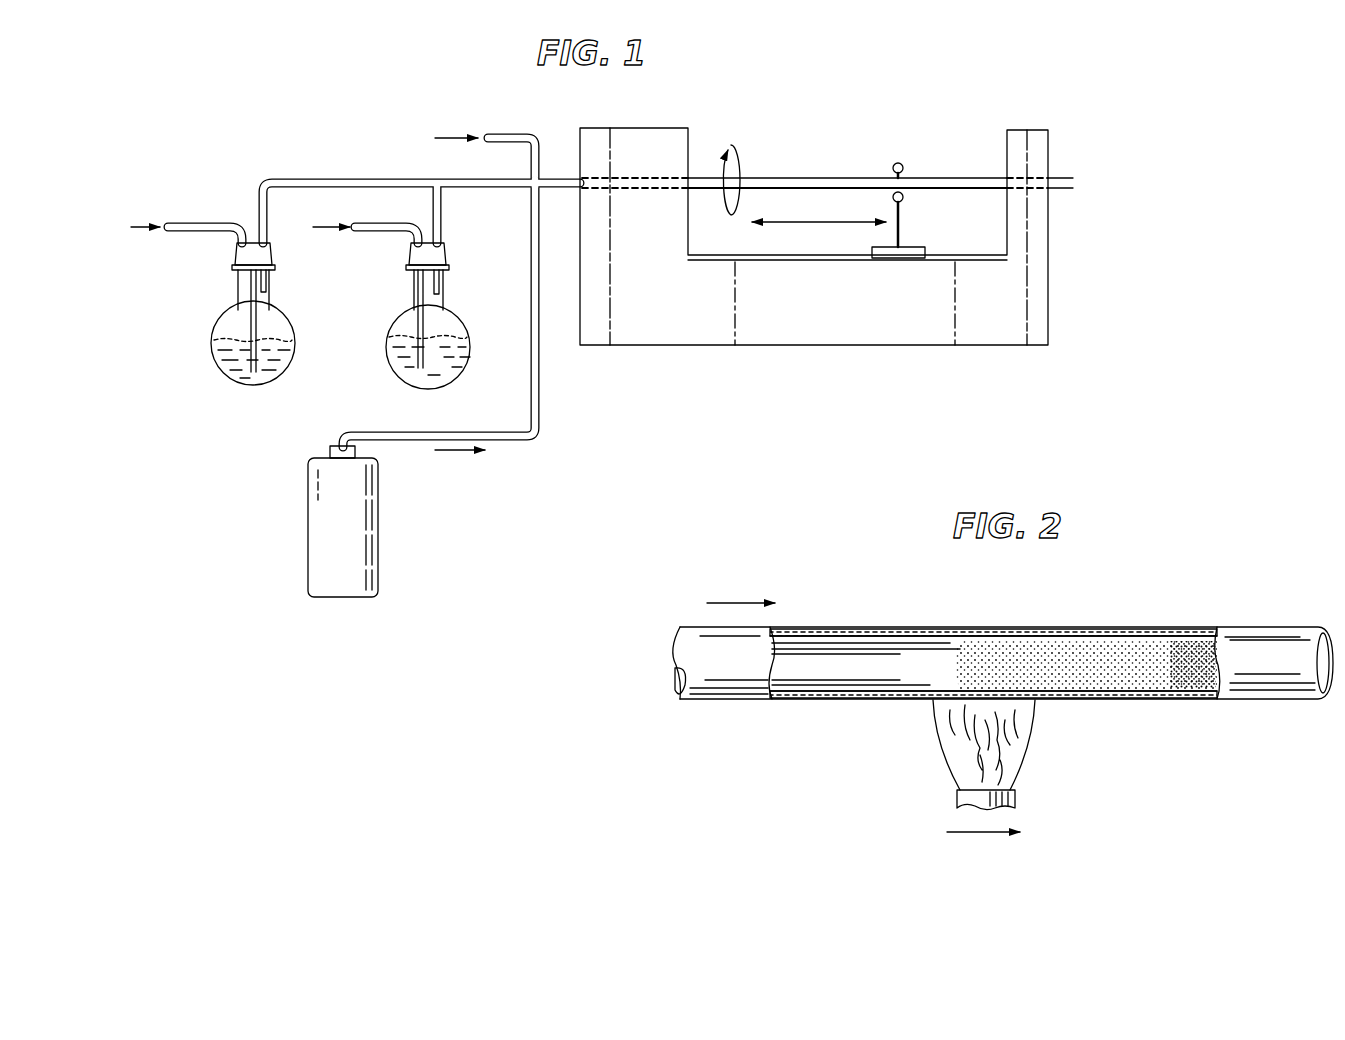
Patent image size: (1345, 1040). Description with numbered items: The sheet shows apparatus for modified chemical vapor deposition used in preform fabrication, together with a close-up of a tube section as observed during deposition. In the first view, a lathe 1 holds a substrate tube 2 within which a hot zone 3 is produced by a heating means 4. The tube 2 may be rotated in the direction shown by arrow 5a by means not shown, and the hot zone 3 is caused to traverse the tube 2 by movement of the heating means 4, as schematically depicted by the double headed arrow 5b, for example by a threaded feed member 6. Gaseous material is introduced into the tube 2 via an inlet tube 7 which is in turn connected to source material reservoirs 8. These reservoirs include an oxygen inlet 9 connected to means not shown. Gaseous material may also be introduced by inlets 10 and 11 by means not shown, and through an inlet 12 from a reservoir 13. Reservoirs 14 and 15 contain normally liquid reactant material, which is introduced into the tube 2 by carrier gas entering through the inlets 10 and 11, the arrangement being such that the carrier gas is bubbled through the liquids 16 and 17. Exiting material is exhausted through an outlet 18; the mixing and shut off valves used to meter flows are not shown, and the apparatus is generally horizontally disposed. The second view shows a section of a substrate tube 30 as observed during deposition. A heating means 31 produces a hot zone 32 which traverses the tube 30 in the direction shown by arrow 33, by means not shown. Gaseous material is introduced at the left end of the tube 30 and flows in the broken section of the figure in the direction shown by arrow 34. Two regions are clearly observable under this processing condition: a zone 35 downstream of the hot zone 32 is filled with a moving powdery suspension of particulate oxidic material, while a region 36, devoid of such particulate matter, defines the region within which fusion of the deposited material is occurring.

In FIG. 1, the lathe 1 is at (634, 135).
In FIG. 1, the substrate tube 2 is at (805, 175).
In FIG. 1, the hot zone 3 is at (903, 163).
In FIG. 1, the heating means 4 is at (912, 246).
In FIG. 1, the arrow 5a is at (735, 152).
In FIG. 1, the double headed arrow 5b is at (819, 237).
In FIG. 1, the threaded feed member 6 is at (840, 262).
In FIG. 1, the inlet tube 7 is at (655, 192).
In FIG. 1, the source material reservoirs 8 is at (329, 162).
In FIG. 1, the oxygen inlet 9 is at (540, 152).
In FIG. 1, the inlet 10 is at (208, 225).
In FIG. 1, the inlet 11 is at (372, 233).
In FIG. 1, the inlet 12 is at (532, 252).
In FIG. 1, the reservoir 13 is at (330, 525).
In FIG. 1, the reservoir 14 is at (242, 391).
In FIG. 1, the reservoir 15 is at (466, 368).
In FIG. 1, the liquid 16 is at (218, 353).
In FIG. 1, the liquid 17 is at (398, 355).
In FIG. 1, the outlet 18 is at (1068, 176).
In FIG. 2, the substrate tube 30 is at (1285, 645).
In FIG. 2, the heating means 31 is at (1015, 722).
In FIG. 2, the hot zone 32 is at (957, 645).
In FIG. 2, the arrow 33 is at (985, 835).
In FIG. 2, the arrow 34 is at (741, 600).
In FIG. 2, the zone 35 is at (1122, 640).
In FIG. 2, the region 36 is at (857, 690).